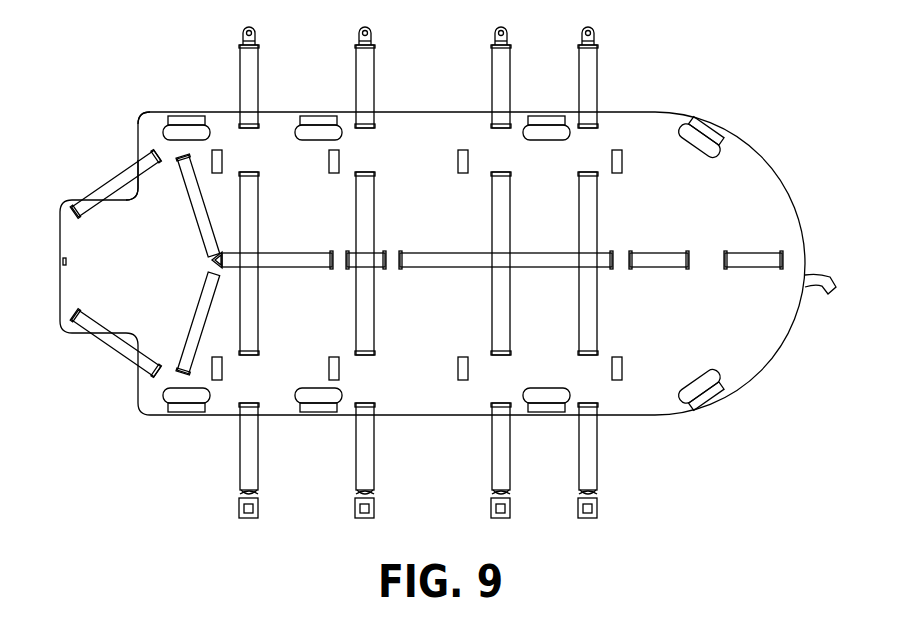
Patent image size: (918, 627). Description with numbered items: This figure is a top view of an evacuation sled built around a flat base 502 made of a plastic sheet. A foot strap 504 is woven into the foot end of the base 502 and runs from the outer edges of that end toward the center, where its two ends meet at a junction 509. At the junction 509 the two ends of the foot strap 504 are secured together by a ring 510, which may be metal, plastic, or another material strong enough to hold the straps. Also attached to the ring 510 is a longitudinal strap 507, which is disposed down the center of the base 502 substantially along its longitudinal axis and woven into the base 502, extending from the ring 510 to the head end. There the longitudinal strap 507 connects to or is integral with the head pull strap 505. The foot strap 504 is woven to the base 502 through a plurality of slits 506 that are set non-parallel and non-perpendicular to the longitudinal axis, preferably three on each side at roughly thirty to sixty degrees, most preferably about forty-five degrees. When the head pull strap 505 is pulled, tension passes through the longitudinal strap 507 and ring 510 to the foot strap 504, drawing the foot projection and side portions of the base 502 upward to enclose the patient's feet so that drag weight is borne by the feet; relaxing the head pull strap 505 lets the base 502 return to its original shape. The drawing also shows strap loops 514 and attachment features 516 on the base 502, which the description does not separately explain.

The base 502 is at (752, 163).
The foot strap 504 is at (122, 180).
The head pull strap 505 is at (818, 292).
The slits 506 is at (150, 152).
The longitudinal strap 507 is at (285, 253).
The junction 509 is at (222, 270).
The ring 510 is at (579, 405).
The strap loop 514 is at (509, 37).
The attachment bump 516 is at (185, 130).